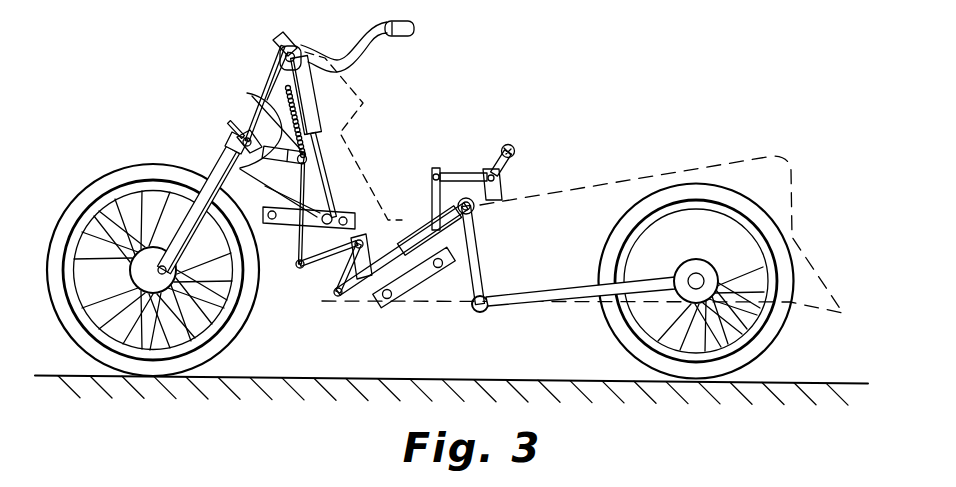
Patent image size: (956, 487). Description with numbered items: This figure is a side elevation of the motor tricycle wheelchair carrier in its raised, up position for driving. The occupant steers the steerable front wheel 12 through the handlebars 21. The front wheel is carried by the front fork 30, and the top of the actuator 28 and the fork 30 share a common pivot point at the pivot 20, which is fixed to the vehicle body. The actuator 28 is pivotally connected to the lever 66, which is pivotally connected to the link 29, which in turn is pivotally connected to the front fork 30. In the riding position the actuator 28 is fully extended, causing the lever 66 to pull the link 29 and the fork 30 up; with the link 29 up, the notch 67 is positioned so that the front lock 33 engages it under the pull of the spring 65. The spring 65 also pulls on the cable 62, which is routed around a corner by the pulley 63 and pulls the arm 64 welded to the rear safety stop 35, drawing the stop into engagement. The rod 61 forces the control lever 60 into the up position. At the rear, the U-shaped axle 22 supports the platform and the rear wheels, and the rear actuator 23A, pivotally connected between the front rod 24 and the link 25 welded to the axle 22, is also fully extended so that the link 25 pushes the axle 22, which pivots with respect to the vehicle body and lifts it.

The steerable front wheel 12 is at (233, 323).
The pivot 20 is at (292, 43).
The handlebars 21 is at (406, 27).
The U-shaped axle 22 is at (569, 300).
The rear actuator 23A is at (412, 222).
The front rod 24 is at (337, 297).
The link 25 is at (481, 242).
The actuator 28 is at (311, 98).
The link 29 is at (223, 163).
The front fork 30 is at (257, 80).
The front lock 33 is at (246, 100).
The rear safety stop 35 is at (418, 282).
The control lever 60 is at (516, 147).
The rod 61 is at (432, 183).
The cable 62 is at (318, 265).
The pulley 63 is at (296, 268).
The arm 64 is at (374, 283).
The spring 65 is at (269, 54).
The lever 66 is at (288, 222).
The notch 67 is at (226, 148).